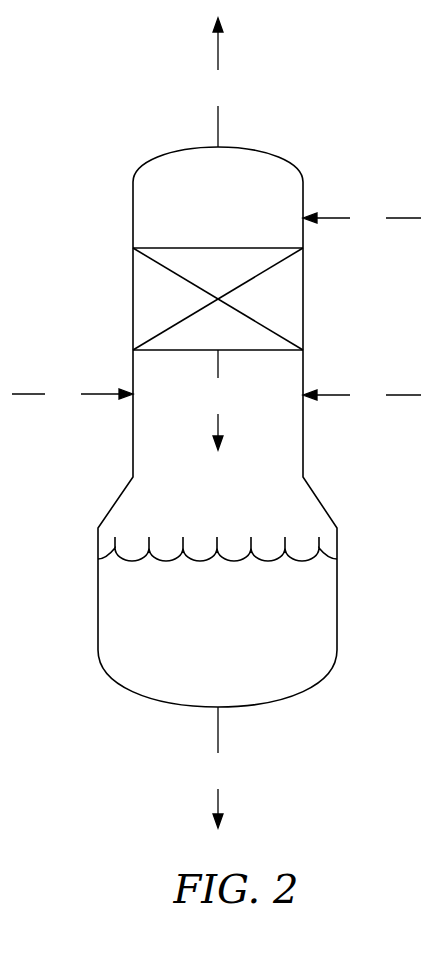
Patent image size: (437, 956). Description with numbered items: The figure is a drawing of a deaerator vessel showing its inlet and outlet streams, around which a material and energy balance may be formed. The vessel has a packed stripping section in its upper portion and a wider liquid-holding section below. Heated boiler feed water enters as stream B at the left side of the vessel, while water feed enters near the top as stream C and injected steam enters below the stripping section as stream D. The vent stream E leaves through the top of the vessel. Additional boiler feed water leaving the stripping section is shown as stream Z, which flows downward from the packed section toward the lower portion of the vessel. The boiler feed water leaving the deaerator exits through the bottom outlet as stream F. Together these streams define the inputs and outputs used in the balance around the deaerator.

The reactor/separator vessel with packed section vessel is at (217, 427).
The vent stream E is at (218, 82).
The water feed C is at (362, 218).
The injected steam D is at (362, 395).
The heated boiler feed water B is at (72, 394).
The additional boiler feed water leaving the stripping section Z is at (218, 400).
The boiler feed water leaving the deaerator F is at (218, 767).